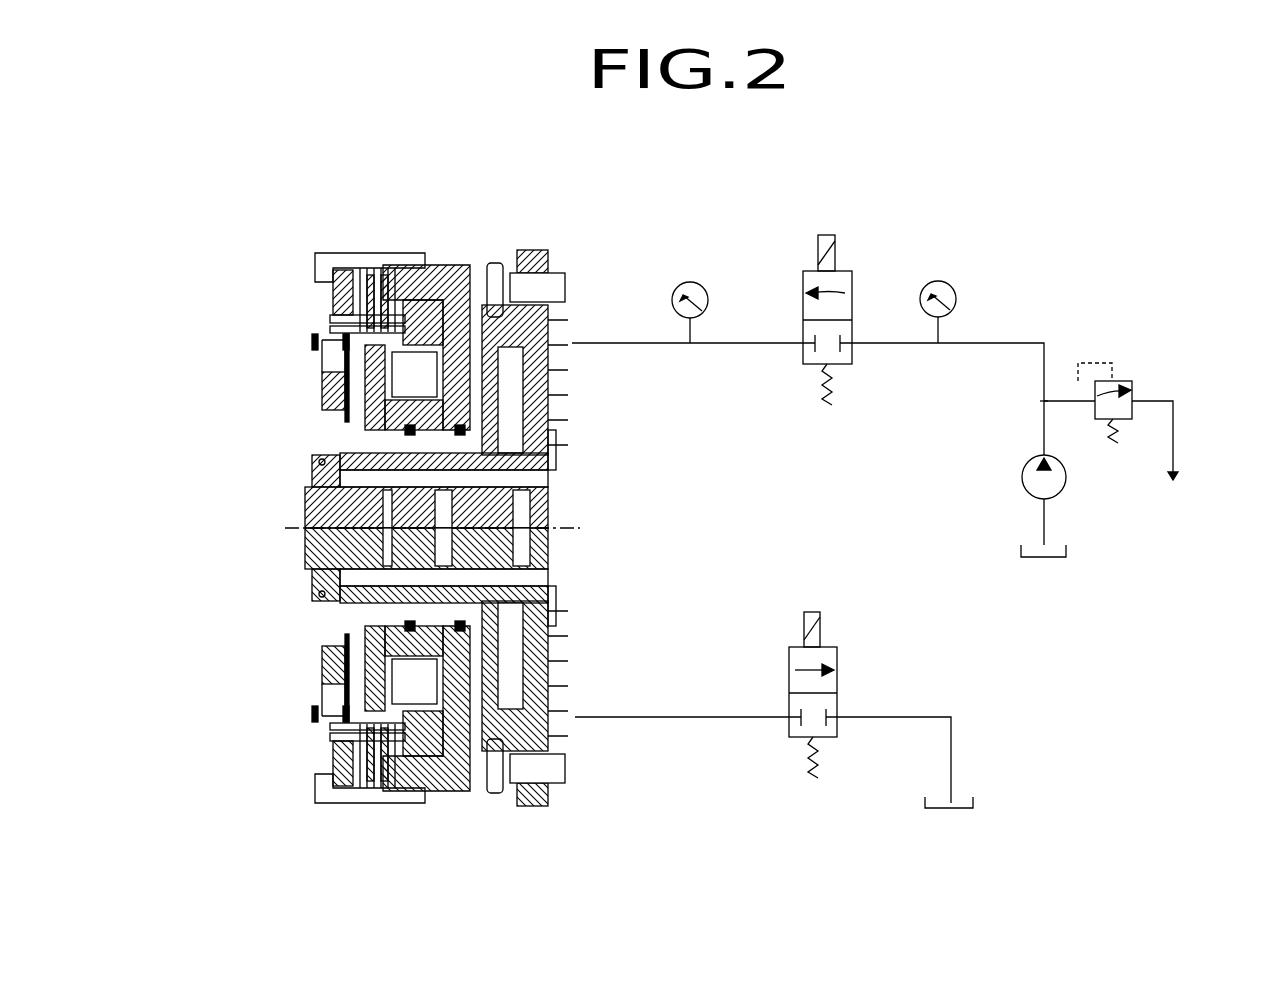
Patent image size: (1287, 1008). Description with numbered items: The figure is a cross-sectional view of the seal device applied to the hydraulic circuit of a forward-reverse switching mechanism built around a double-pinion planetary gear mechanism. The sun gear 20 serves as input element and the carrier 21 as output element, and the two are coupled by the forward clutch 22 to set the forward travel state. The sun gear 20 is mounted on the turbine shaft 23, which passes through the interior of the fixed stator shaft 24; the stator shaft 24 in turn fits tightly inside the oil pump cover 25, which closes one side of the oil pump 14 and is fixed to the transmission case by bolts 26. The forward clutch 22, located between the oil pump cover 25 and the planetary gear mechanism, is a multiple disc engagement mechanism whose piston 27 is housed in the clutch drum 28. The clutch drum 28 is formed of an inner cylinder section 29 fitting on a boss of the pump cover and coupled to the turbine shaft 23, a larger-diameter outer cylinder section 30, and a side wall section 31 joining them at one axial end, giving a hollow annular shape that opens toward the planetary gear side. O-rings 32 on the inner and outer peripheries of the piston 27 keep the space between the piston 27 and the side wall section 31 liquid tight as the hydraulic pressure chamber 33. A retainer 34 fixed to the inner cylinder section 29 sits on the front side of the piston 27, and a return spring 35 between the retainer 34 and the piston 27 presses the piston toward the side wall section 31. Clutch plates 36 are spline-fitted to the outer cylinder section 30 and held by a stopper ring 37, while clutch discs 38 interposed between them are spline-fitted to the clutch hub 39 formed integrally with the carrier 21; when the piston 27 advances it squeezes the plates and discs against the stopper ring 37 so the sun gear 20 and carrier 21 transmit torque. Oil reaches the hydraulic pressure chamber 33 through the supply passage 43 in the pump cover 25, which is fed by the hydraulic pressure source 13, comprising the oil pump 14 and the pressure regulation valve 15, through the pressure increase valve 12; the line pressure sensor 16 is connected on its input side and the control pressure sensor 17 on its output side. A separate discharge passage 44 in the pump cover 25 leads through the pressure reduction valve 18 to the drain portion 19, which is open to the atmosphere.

The pressure increase valve 12 is at (852, 271).
The hydraulic pressure source 13 is at (1095, 470).
The oil pump 14 is at (1022, 477).
The pressure regulation valve 15 is at (1132, 380).
The line pressure sensor 16 is at (950, 283).
The control pressure sensor 17 is at (700, 283).
The pressure reduction valve 18 is at (837, 660).
The drain portion 19 is at (973, 800).
The sun gear 20 is at (320, 455).
The carrier 21 is at (327, 380).
The forward clutch 22 is at (292, 238).
The turbine shaft 23 is at (553, 505).
The stator shaft 24 is at (552, 458).
The oil pump cover 25 is at (553, 313).
The bolts 26 is at (492, 262).
The piston 27 is at (472, 775).
The clutch drum 28 is at (445, 792).
The inner cylinder section 29 is at (330, 668).
The outer cylinder section 30 is at (368, 808).
The side wall section 31 is at (515, 665).
The O-rings 32 is at (390, 660).
The hydraulic pressure chamber 33 is at (510, 378).
The retainer 34 is at (322, 730).
The return spring 35 is at (320, 740).
The clutch plates 36 is at (366, 258).
The stopper ring 37 is at (330, 287).
The clutch discs 38 is at (343, 328).
The clutch hub 39 is at (318, 345).
The supply passage 43 is at (530, 358).
The discharge passage 44 is at (548, 676).